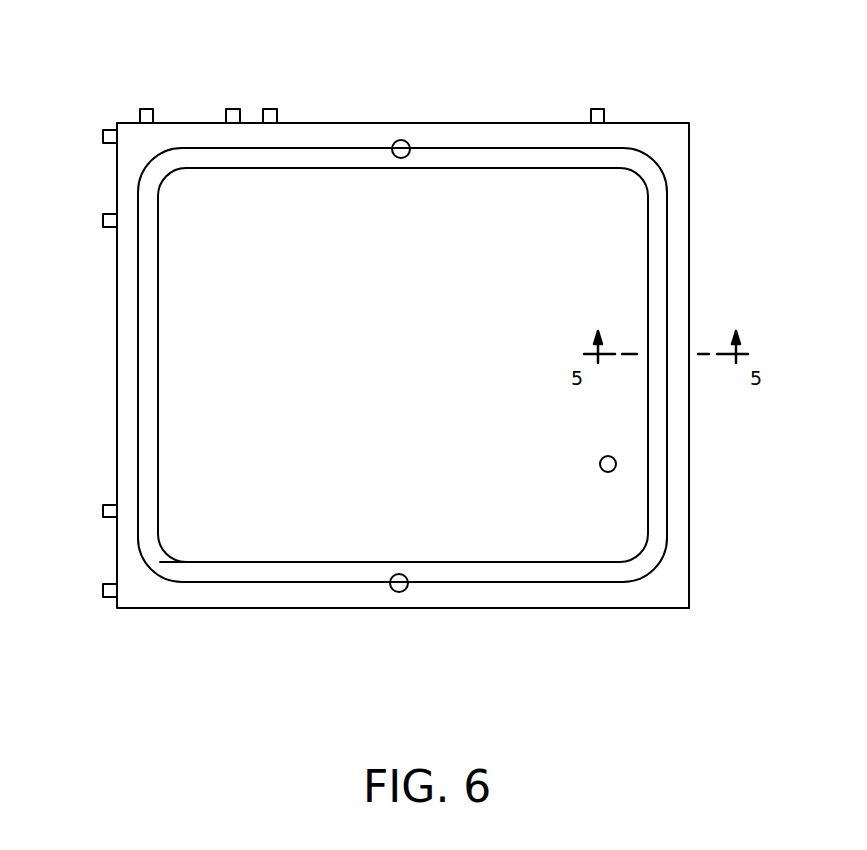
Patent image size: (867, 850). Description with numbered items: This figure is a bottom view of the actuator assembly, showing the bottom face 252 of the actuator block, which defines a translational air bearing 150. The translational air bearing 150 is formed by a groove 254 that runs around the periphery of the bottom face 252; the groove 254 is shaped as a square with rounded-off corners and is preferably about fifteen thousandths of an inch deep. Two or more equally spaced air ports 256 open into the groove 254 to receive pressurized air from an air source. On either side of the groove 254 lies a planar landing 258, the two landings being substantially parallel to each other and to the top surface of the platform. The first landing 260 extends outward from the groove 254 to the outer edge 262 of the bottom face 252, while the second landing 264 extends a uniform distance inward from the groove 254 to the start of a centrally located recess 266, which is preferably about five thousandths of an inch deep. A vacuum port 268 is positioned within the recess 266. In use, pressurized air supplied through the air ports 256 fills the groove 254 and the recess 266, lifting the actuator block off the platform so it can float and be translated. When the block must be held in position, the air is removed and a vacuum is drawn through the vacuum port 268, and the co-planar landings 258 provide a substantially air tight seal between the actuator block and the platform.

The translational air bearing 150 is at (183, 419).
The bottom face 252 is at (237, 190).
The groove 254 is at (345, 148).
The air ports 256 is at (405, 143).
The planar landings 258 is at (236, 571).
The first landing 260 is at (317, 594).
The outer edge 262 is at (117, 330).
The second landing 264 is at (655, 422).
The centrally located recess 266 is at (498, 527).
The vacuum port 268 is at (613, 467).